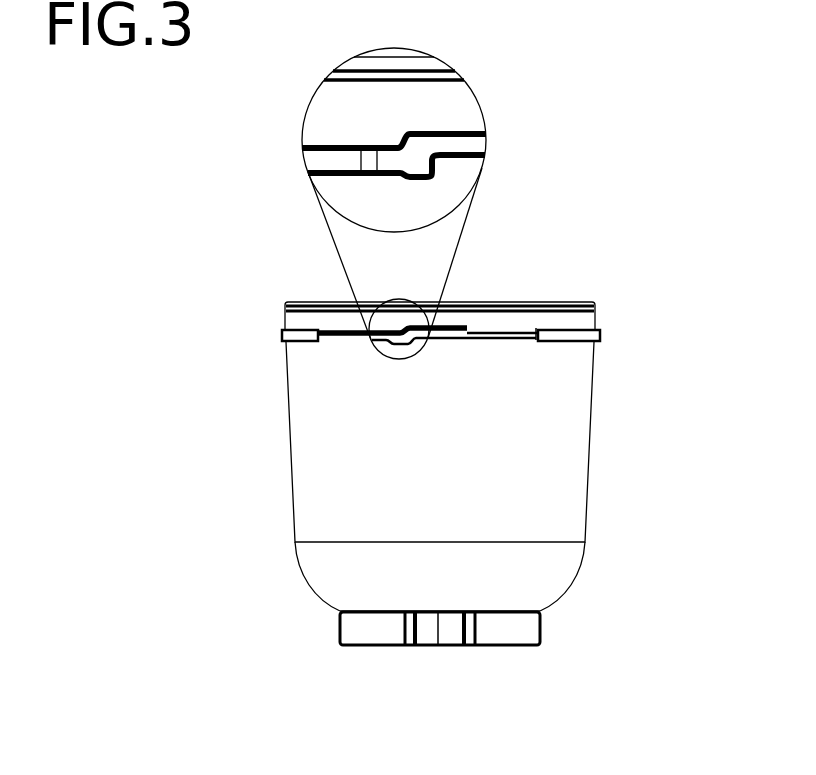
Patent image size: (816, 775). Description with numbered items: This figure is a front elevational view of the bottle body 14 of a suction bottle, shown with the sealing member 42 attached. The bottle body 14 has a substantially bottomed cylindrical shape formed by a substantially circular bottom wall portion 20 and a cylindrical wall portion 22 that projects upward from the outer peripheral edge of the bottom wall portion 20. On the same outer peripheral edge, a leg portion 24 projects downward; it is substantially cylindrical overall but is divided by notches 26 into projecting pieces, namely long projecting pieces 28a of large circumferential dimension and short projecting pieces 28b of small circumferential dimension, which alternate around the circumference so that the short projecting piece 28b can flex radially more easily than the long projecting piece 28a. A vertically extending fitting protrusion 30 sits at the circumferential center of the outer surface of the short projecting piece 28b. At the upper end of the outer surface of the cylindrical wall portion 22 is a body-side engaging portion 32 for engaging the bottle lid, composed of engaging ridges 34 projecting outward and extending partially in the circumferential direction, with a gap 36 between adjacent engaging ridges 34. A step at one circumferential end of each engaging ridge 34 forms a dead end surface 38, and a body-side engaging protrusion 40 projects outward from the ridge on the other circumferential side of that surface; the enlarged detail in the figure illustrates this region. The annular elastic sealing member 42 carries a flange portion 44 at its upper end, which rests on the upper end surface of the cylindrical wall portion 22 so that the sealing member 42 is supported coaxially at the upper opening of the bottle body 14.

The bottle body 14 is at (458, 476).
The bottom wall portion 20 is at (386, 606).
The cylindrical wall portion 22 is at (318, 437).
The leg portion 24 is at (405, 689).
The notch 26 is at (412, 630).
The long projecting piece 28a is at (353, 632).
The short projecting piece 28b is at (448, 632).
The fitting protrusion 30 is at (437, 623).
The body-side engaging portion 32 is at (419, 351).
The engaging ridge 34 is at (318, 335).
The gap 36 is at (524, 333).
The dead end surface 38 is at (450, 165).
The body-side engaging protrusion 40 is at (369, 158).
The sealing member 42 is at (420, 315).
The flange portion 44 is at (492, 302).